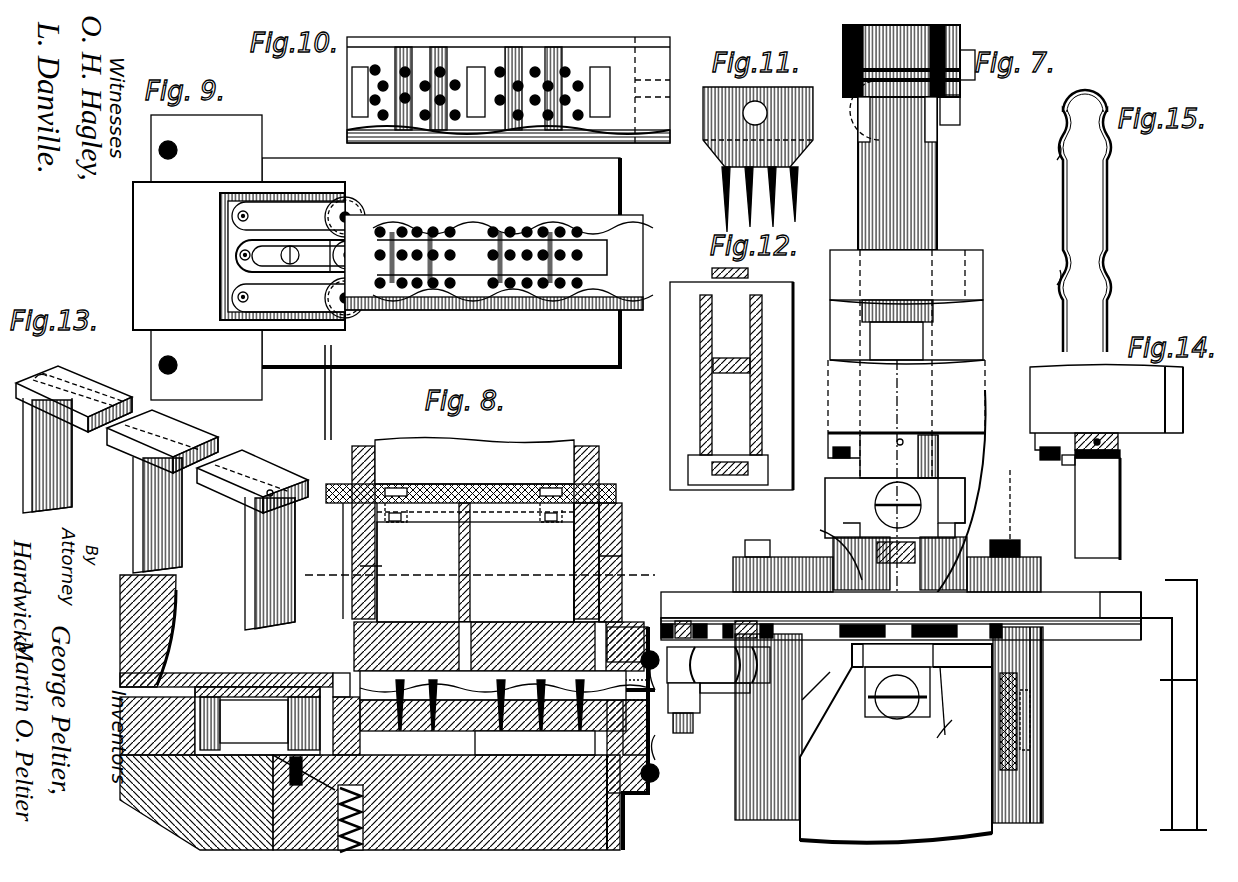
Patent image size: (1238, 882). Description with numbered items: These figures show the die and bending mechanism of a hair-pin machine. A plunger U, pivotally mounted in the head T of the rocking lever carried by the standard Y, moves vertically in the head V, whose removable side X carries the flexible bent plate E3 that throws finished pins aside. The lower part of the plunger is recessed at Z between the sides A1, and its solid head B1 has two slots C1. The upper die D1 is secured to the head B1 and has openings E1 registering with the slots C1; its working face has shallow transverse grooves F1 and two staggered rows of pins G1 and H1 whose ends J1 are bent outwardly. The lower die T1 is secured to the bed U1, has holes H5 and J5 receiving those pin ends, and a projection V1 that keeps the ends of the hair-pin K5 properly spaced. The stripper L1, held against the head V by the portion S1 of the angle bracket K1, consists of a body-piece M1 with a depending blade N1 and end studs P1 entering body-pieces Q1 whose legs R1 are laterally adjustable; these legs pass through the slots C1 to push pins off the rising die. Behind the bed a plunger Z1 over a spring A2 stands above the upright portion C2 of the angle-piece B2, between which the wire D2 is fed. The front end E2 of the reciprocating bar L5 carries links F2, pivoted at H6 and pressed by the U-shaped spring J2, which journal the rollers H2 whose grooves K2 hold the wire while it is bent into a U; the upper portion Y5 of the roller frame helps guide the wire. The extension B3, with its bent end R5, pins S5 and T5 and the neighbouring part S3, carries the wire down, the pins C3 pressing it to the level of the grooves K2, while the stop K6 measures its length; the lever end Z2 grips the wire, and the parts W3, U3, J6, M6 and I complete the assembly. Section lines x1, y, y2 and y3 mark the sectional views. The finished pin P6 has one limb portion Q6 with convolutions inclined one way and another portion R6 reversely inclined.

In FIG. 10, the upper die D1 is at (660, 52).
In FIG. 8, the upper die D1 is at (652, 760).
In FIG. 11, the upper die D1 is at (805, 160).
In FIG. 7, the upper die D1 is at (940, 482).
In FIG. 14, the upper die D1 is at (1120, 640).
In FIG. 10, the transverse grooves F1 is at (373, 134).
In FIG. 10, the openings E1 is at (360, 100).
In FIG. 8, the openings E1 is at (345, 652).
In FIG. 7, the openings E1 is at (660, 707).
In FIG. 10, the row of pins G1 is at (372, 98).
In FIG. 11, the row of pins G1 is at (730, 184).
In FIG. 10, the row of pins H1 is at (583, 74).
In FIG. 11, the row of pins H1 is at (758, 127).
In FIG. 9, the bed U1 is at (441, 262).
In FIG. 8, the bed U1 is at (626, 812).
In FIG. 7, the bed U1 is at (971, 738).
In FIG. 9, the reciprocating bar L5 is at (222, 257).
In FIG. 9, the wire D2 is at (344, 392).
In FIG. 9, the front end of reciprocating bar E2 is at (260, 256).
In FIG. 8, the front end of reciprocating bar E2 is at (236, 721).
In FIG. 9, the links F2 is at (288, 257).
In FIG. 8, the links F2 is at (505, 700).
In FIG. 9, the pivot H6 is at (238, 211).
In FIG. 9, the U-shaped spring J2 is at (230, 270).
In FIG. 8, the U-shaped spring J2 is at (260, 723).
In FIG. 9, the angle-piece B2 is at (340, 250).
In FIG. 8, the angle-piece B2 is at (227, 802).
In FIG. 9, the plunger Z1 is at (316, 273).
In FIG. 8, the plunger Z1 is at (363, 804).
In FIG. 9, the rollers H2 is at (348, 214).
In FIG. 8, the rollers H2 is at (232, 673).
In FIG. 7, the rollers H2 is at (935, 732).
In FIG. 9, the grooves K2 is at (365, 212).
In FIG. 8, the grooves K2 is at (280, 673).
In FIG. 7, the grooves K2 is at (953, 694).
In FIG. 9, the lower die T1 is at (628, 222).
In FIG. 8, the lower die T1 is at (493, 734).
In FIG. 7, the lower die T1 is at (922, 655).
In FIG. 9, the projection V1 is at (503, 257).
In FIG. 8, the projection V1 is at (651, 736).
In FIG. 7, the projection V1 is at (897, 683).
In FIG. 9, the holes H5 is at (475, 225).
In FIG. 9, the holes J5 is at (490, 262).
In FIG. 9, the hair-pin K5 is at (580, 285).
In FIG. 13, the body-pieces Q1 is at (72, 388).
In FIG. 8, the body-pieces Q1 is at (477, 476).
In FIG. 7, the body-pieces Q1 is at (920, 440).
In FIG. 14, the body-pieces Q1 is at (1122, 455).
In FIG. 13, the legs R1 is at (72, 492).
In FIG. 8, the legs R1 is at (494, 556).
In FIG. 12, the legs R1 is at (712, 270).
In FIG. 7, the legs R1 is at (860, 470).
In FIG. 13, the pins or studs P1 is at (112, 433).
In FIG. 8, the pins or studs P1 is at (475, 489).
In FIG. 14, the pins or studs P1 is at (1100, 435).
In FIG. 13, the body-piece M1 is at (157, 500).
In FIG. 8, the body-piece M1 is at (458, 484).
In FIG. 13, the leg or blade N1 is at (182, 552).
In FIG. 8, the leg or blade N1 is at (458, 562).
In FIG. 12, the leg or blade N1 is at (730, 358).
In FIG. 14, the leg or blade N1 is at (1097, 509).
In FIG. 13, the stripper L1 is at (252, 482).
In FIG. 8, the section line y2 is at (494, 526).
In FIG. 8, the portion of bracket S1 is at (463, 529).
In FIG. 14, the portion of bracket S1 is at (1066, 465).
In FIG. 8, the angle-shaped bracket K1 is at (455, 512).
In FIG. 7, the angle-shaped bracket K1 is at (840, 446).
In FIG. 14, the angle-shaped bracket K1 is at (1040, 448).
In FIG. 8, the section line x1 is at (479, 573).
In FIG. 8, the sides of plunger recess A1 is at (475, 572).
In FIG. 12, the sides of plunger recess A1 is at (700, 390).
In FIG. 7, the sides of plunger recess A1 is at (906, 401).
In FIG. 8, the section line y3 is at (586, 562).
In FIG. 8, the head of plunger B1 is at (497, 630).
In FIG. 12, the head of plunger B1 is at (722, 470).
In FIG. 7, the head of plunger B1 is at (895, 508).
In FIG. 8, the slots C1 is at (458, 625).
In FIG. 12, the slots C1 is at (745, 378).
In FIG. 8, the upright portion C2 is at (612, 625).
In FIG. 8, the upper portion of roller frame Y5 is at (335, 685).
In FIG. 8, the pins C3 is at (261, 742).
In FIG. 7, the pins C3 is at (1058, 663).
In FIG. 8, the ends of pins J1 is at (552, 735).
In FIG. 11, the ends of pins J1 is at (727, 206).
In FIG. 7, the ends of pins J1 is at (883, 552).
In FIG. 8, the spring A2 is at (446, 802).
In FIG. 7, the head of rocking lever T is at (843, 45).
In FIG. 7, the plunger U is at (905, 165).
In FIG. 7, the head of arm V is at (906, 305).
In FIG. 14, the head of arm V is at (1106, 399).
In FIG. 7, the side of head X is at (975, 265).
In FIG. 7, the slot or recess Z is at (897, 330).
In FIG. 7, the section line y is at (906, 595).
In FIG. 7, the flexible bent plate E3 is at (985, 503).
In FIG. 14, the flexible bent plate E3 is at (1017, 505).
In FIG. 7, the extension B3 is at (710, 592).
In FIG. 7, the pin T5 is at (735, 622).
In FIG. 7, the pins S5 is at (690, 621).
In FIG. 7, the screw S3 is at (752, 621).
In FIG. 7, the bracket U3 is at (718, 665).
In FIG. 7, the end of lever Z2 is at (684, 708).
In FIG. 7, the rod W3 is at (725, 695).
In FIG. 7, the standard Y is at (953, 743).
In FIG. 7, the spring J6 is at (1000, 735).
In FIG. 7, the rod M6 is at (1043, 678).
In FIG. 7, the lever I is at (812, 687).
In FIG. 15, the hair-pin P6 is at (1100, 218).
In FIG. 15, the portion of limb Q6 is at (1063, 150).
In FIG. 15, the portion of limb R6 is at (1063, 284).
In FIG. 14, the bent end R5 is at (1142, 592).
In FIG. 14, the adjustable stop K6 is at (1172, 700).